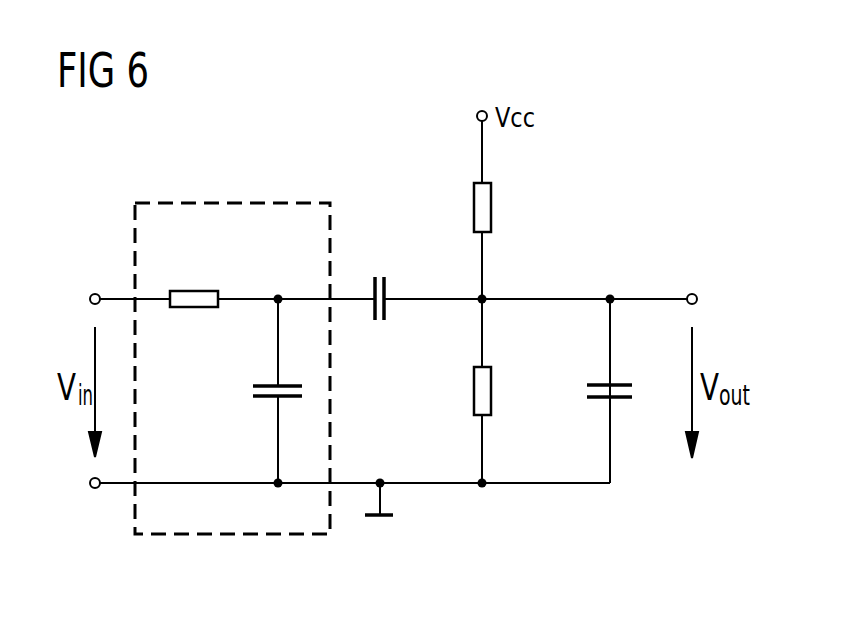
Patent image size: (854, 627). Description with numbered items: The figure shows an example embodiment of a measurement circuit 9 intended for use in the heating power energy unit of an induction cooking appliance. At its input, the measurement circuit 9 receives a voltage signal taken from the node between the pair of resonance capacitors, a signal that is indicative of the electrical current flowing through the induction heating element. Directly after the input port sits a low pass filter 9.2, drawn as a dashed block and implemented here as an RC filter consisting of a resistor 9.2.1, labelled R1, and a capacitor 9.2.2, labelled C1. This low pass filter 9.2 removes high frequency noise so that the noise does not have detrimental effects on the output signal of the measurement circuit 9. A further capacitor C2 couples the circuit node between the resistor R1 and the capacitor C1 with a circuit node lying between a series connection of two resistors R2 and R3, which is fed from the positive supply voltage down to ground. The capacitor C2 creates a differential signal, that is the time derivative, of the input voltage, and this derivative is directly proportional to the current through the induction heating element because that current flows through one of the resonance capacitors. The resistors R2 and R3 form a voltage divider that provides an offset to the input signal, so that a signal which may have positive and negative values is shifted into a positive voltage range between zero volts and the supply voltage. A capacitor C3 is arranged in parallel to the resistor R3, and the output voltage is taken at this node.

The measurement circuit 9 is at (660, 201).
The low pass filter 9.2 is at (236, 203).
The resistor 9.2.1 is at (195, 291).
The capacitor 9.2.2 is at (253, 390).
The resistor R1 is at (193, 307).
The capacitor C1 is at (288, 385).
The capacitor C2 is at (382, 277).
The resistor R2 is at (474, 207).
The resistor R3 is at (474, 392).
The capacitor C3 is at (587, 390).